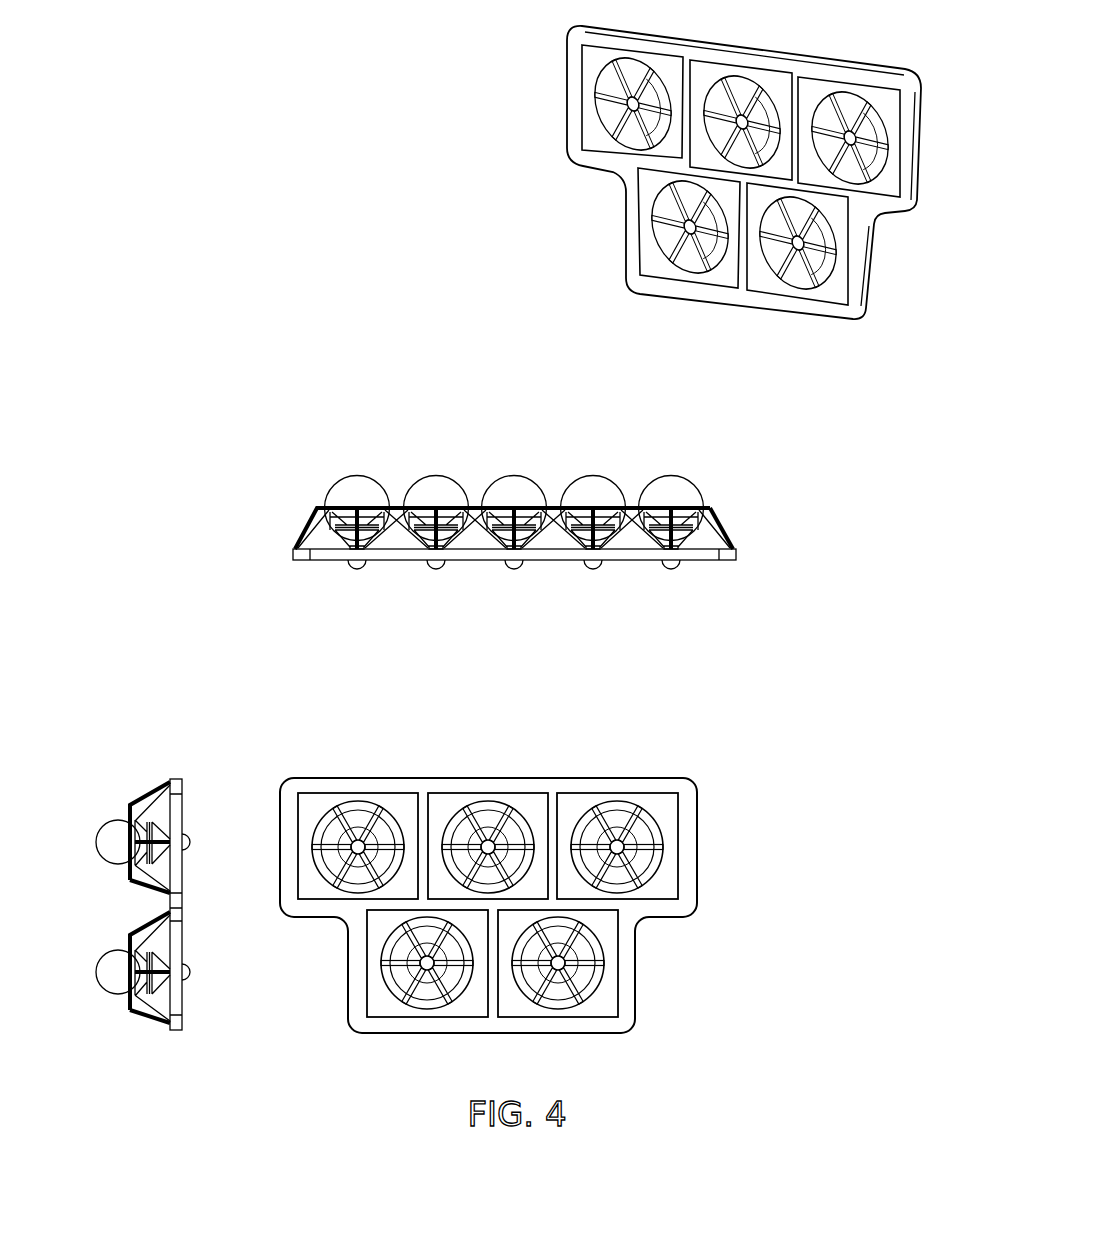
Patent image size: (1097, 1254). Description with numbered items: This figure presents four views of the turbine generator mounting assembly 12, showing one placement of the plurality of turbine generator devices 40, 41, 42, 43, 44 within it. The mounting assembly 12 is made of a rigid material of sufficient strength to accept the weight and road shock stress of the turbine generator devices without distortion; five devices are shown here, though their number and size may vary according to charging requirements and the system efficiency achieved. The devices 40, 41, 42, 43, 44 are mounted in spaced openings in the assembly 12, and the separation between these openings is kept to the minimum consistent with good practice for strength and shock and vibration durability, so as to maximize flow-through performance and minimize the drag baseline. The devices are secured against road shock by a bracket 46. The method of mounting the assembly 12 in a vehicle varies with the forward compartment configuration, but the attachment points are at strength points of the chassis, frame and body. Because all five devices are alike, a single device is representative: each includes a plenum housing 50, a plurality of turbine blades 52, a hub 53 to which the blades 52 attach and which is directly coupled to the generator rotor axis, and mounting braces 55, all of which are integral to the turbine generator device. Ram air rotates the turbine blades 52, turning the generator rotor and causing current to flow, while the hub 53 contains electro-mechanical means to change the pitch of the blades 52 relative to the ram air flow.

The turbine generator mounting assembly 12 is at (403, 550).
The turbine generator device 40 is at (292, 454).
The turbine generator device 41 is at (371, 454).
The turbine generator device 42 is at (450, 454).
The turbine generator device 43 is at (533, 454).
The turbine generator device 44 is at (624, 454).
The bracket 46 is at (389, 723).
The plenum housing 50 is at (600, 529).
The turbine blades 52 is at (623, 531).
The hub 53 is at (474, 699).
The mounting braces 55 is at (401, 792).